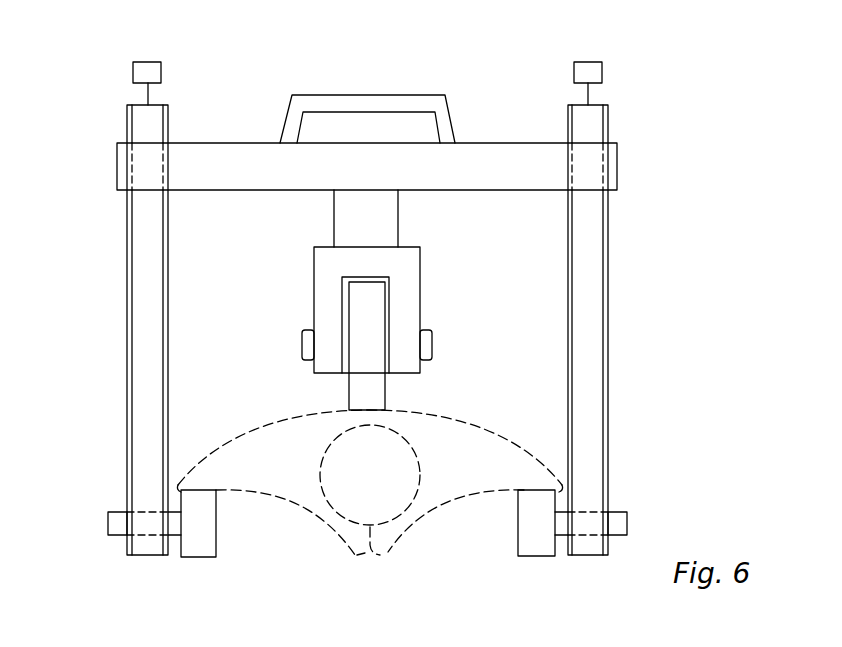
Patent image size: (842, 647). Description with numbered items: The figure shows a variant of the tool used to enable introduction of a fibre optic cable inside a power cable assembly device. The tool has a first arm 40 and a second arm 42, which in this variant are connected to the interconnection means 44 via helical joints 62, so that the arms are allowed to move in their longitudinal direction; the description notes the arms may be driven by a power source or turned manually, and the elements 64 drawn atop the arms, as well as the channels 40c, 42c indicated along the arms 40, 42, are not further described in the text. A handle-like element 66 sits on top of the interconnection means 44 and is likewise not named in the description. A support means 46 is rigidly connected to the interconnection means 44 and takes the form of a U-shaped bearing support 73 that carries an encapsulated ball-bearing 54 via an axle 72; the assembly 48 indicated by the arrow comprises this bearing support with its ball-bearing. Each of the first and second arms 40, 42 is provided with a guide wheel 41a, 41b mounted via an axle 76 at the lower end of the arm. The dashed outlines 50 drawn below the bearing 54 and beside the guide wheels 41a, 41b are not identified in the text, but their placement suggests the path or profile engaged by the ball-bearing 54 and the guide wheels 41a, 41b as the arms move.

The first arm 40 is at (147, 292).
The first post channel 40c is at (173, 341).
The second arm 42 is at (592, 285).
The second post channel 42c is at (563, 341).
The interconnection means 44 is at (285, 180).
The support means 46 is at (380, 217).
The head assembly 48 is at (372, 328).
The pressing element path 50 is at (232, 536).
The encapsulated ball-bearing 54 is at (365, 395).
The helical joint 62 is at (166, 162).
The adjustment knob 64 is at (148, 60).
The handle 66 is at (368, 102).
The axle 72 is at (302, 345).
The U-shaped bearing support 73 is at (314, 288).
The axle 76 is at (108, 523).
The guide wheel 41a is at (198, 547).
The guide wheel 41b is at (535, 547).